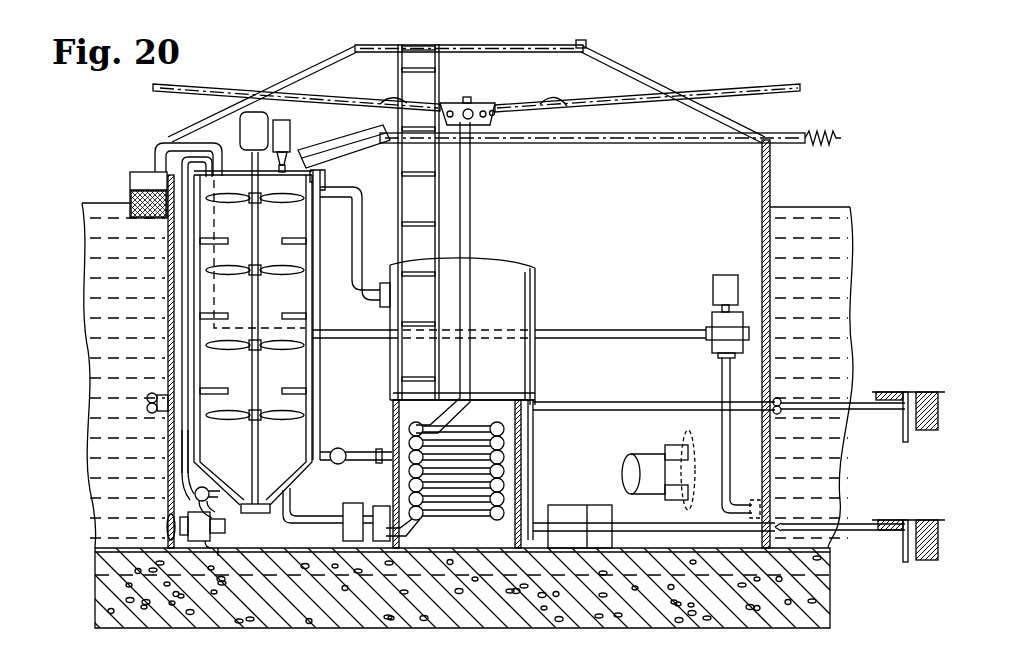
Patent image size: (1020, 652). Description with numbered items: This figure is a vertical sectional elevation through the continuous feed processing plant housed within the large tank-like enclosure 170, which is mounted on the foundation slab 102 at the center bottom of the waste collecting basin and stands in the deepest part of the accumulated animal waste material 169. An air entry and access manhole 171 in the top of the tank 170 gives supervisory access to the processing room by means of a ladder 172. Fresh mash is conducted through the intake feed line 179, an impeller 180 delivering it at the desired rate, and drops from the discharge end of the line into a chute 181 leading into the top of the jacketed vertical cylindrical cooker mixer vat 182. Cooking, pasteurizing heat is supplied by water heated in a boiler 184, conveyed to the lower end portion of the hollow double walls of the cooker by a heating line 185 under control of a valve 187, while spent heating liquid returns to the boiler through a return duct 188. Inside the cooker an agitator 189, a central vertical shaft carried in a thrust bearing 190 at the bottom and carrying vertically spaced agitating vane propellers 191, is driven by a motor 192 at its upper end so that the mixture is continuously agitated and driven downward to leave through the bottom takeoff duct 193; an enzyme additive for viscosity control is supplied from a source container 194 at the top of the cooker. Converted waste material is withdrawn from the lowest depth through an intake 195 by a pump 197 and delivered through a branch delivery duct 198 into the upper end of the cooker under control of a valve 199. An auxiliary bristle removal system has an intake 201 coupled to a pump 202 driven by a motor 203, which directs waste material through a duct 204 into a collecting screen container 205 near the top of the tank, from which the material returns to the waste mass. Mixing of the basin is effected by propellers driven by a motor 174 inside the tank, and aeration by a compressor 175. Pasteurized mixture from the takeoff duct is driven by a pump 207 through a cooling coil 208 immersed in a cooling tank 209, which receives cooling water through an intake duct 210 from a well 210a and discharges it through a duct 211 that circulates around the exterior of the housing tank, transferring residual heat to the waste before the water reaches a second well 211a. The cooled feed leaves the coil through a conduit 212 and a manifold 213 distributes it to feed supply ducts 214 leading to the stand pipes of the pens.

The foundation slab 102 is at (97, 578).
The waste material 169 is at (820, 207).
The tank-like enclosure 170 is at (772, 180).
The access manhole 171 is at (582, 45).
The ladder 172 is at (440, 62).
The motor 174 is at (645, 455).
The compressor 175 is at (585, 498).
The intake feed line 179 is at (795, 133).
The impeller 180 is at (836, 142).
The chute 181 is at (344, 153).
The cooker mixer vat 182 is at (335, 300).
The boiler 184 is at (538, 282).
The pipe 185 is at (368, 450).
The valve 187 is at (339, 447).
The return duct 188 is at (356, 222).
The agitator 189 is at (262, 374).
The thrust bearing 190 is at (262, 504).
The agitating vane propellers 191 is at (238, 410).
The motor 192 is at (240, 136).
The bottom takeoff duct 193 is at (295, 512).
The source container 194 is at (291, 140).
The intake 195 is at (168, 526).
The pump 197 is at (216, 549).
The branch delivery duct 198 is at (188, 458).
The valve 199 is at (194, 496).
The intake 201 is at (838, 478).
The pump 202 is at (714, 340).
The motor 203 is at (716, 278).
The duct 204 is at (590, 330).
The collecting screen container 205 is at (130, 186).
The pump 207 is at (346, 530).
The cooling coil 208 is at (505, 447).
The cooling tank 209 is at (530, 478).
The intake duct 210 is at (862, 523).
The well 210a is at (905, 545).
The duct 211 is at (148, 396).
The second well 211a is at (906, 424).
The conduit 212 is at (472, 210).
The manifold 213 is at (478, 103).
The feed supply duct 214 is at (278, 74).